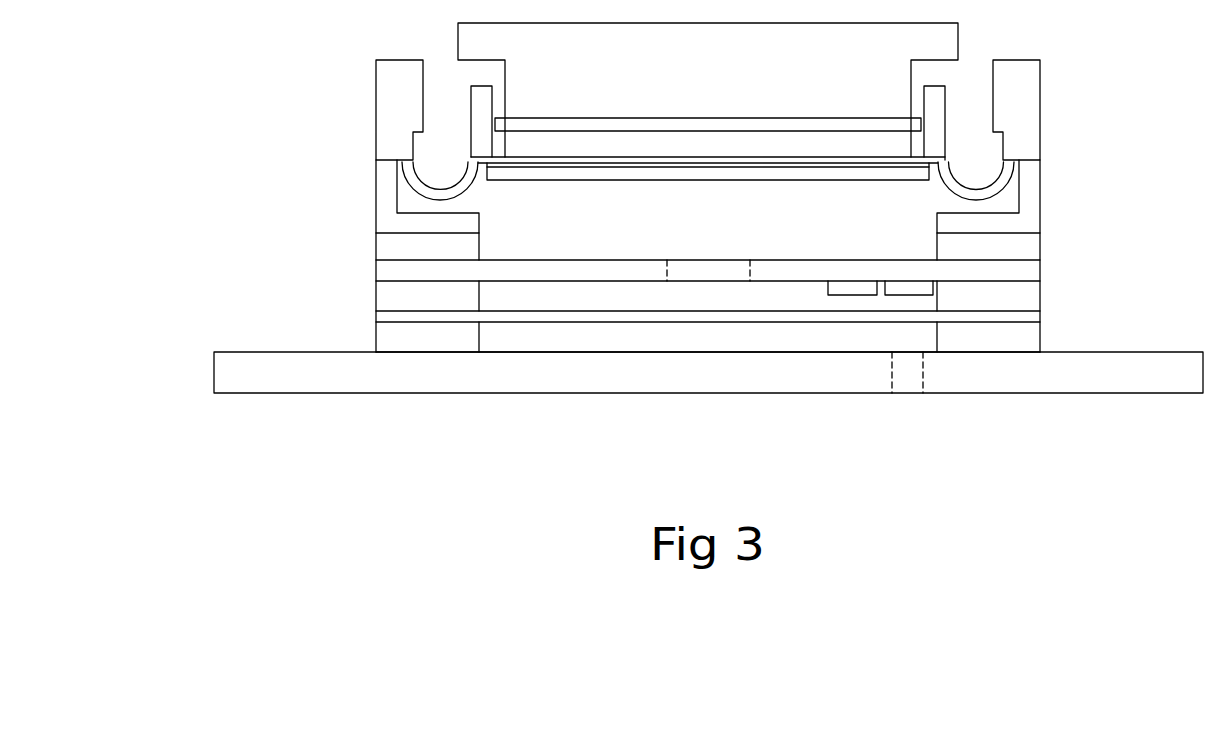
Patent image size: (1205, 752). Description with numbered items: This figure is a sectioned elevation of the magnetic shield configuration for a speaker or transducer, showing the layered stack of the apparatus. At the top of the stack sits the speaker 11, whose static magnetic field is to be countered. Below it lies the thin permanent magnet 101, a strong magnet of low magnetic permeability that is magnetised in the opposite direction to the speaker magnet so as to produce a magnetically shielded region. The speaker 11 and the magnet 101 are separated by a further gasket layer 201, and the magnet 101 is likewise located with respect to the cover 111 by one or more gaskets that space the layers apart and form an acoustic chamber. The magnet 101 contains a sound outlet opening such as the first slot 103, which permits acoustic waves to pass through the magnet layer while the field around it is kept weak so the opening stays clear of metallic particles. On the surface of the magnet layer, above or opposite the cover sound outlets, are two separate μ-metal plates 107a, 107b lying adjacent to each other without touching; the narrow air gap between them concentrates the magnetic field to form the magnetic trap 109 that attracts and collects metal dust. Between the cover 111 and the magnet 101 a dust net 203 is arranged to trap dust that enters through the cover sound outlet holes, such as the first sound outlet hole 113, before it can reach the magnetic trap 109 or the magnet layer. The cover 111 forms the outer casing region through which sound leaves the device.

The speaker 11 is at (1078, 230).
The magnet 101 is at (376, 272).
The first slot 103 is at (703, 268).
The μ-metal plate 107a is at (842, 291).
The μ-metal plate 107b is at (917, 291).
The magnetic trap 109 is at (880, 291).
The cover 111 is at (238, 377).
The first sound outlet hole 113 is at (910, 377).
The gasket layer 201 is at (1028, 337).
The dust net 203 is at (734, 318).